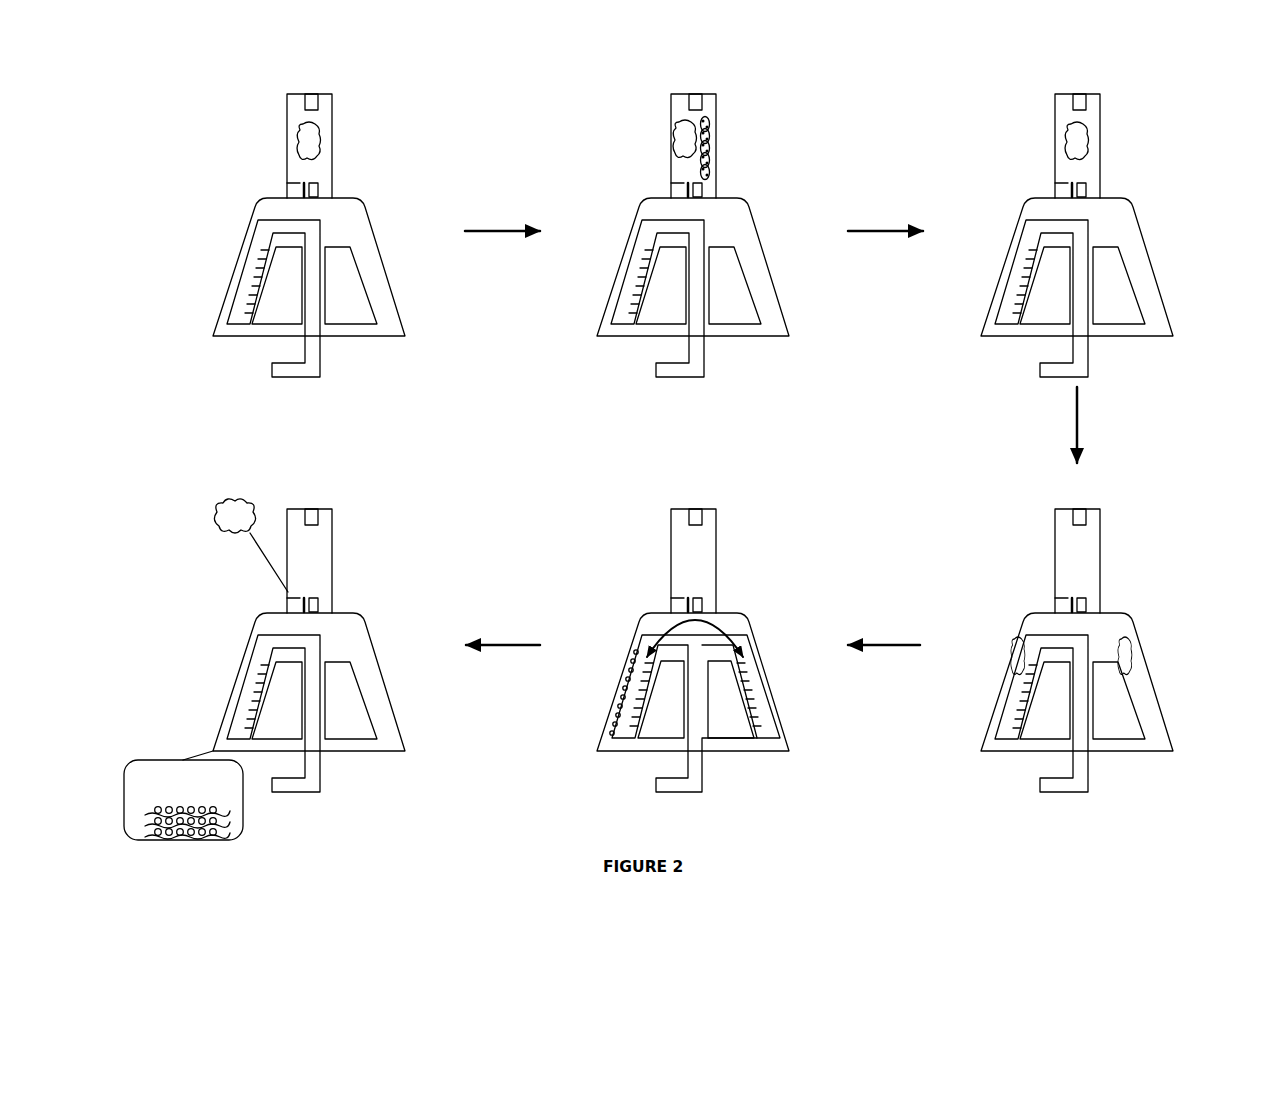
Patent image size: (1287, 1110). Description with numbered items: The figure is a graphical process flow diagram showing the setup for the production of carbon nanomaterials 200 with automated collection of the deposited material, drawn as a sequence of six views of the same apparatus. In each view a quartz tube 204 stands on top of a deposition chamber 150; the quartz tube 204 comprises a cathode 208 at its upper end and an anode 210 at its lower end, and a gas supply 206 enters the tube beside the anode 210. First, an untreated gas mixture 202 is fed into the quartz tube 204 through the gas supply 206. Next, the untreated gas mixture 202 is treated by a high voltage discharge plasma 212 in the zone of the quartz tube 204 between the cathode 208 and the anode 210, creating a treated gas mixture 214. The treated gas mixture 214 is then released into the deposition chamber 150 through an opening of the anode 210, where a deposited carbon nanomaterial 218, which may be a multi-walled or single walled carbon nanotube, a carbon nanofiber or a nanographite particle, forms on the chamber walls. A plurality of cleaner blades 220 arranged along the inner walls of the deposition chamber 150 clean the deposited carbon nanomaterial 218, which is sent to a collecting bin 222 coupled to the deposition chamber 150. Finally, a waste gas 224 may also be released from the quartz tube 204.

The deposition chamber 150 is at (375, 268).
The production of carbon nanomaterials 200 is at (995, 814).
The untreated gas mixture 202 is at (676, 141).
The quartz tube 204 is at (325, 138).
The gas supply 206 is at (295, 191).
The cathode 208 is at (311, 94).
The anode 210 is at (318, 188).
The high voltage discharge plasma 212 is at (713, 147).
The treated gas mixture 214 is at (1183, 642).
The deposited carbon nanomaterial 218 is at (603, 732).
The cleaner blade 220 is at (248, 307).
The collecting bin 222 is at (183, 795).
The waste gas 224 is at (220, 510).